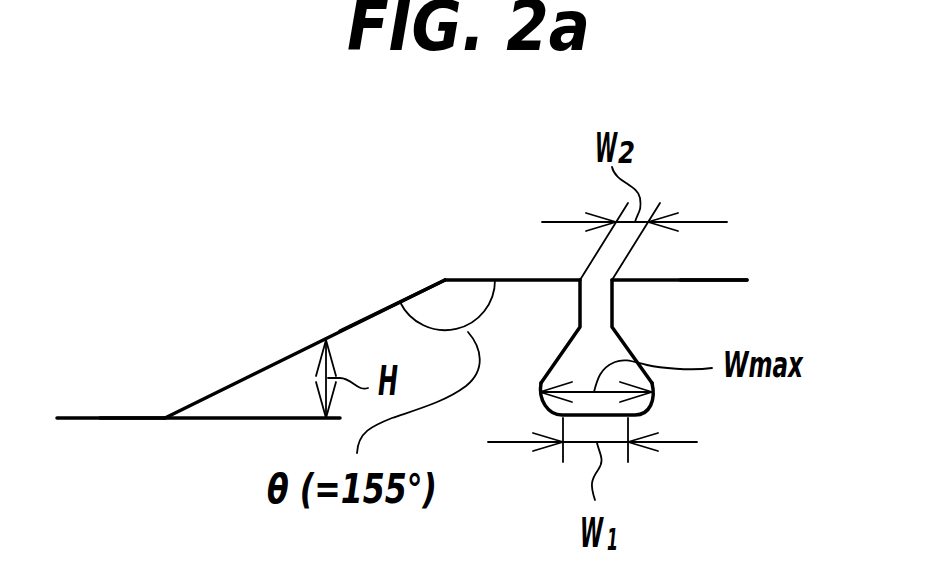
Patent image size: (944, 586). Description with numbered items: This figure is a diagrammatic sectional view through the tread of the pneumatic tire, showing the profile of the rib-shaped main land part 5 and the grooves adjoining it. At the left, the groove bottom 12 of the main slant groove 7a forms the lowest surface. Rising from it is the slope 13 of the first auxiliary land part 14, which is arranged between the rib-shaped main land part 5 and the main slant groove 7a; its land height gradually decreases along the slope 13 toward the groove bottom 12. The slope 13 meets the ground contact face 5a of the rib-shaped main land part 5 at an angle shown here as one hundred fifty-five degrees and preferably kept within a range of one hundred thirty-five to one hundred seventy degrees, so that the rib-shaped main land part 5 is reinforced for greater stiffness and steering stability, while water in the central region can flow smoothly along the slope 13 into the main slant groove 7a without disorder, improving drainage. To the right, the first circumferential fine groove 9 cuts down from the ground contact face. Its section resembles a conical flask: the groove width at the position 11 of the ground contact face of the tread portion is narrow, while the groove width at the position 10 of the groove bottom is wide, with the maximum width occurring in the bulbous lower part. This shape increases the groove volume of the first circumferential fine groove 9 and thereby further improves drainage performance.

The rib-shaped main land part 5 is at (663, 280).
The ground contact face 5a is at (535, 280).
The main slant groove 7a is at (135, 418).
The first circumferential fine groove 9 is at (595, 361).
The position of the groove bottom 10 is at (603, 415).
The position of a ground contact face of the tread portion 11 is at (702, 280).
The groove bottom 12 is at (98, 418).
The slope 13 is at (270, 365).
The first auxiliary land part 14 is at (362, 318).